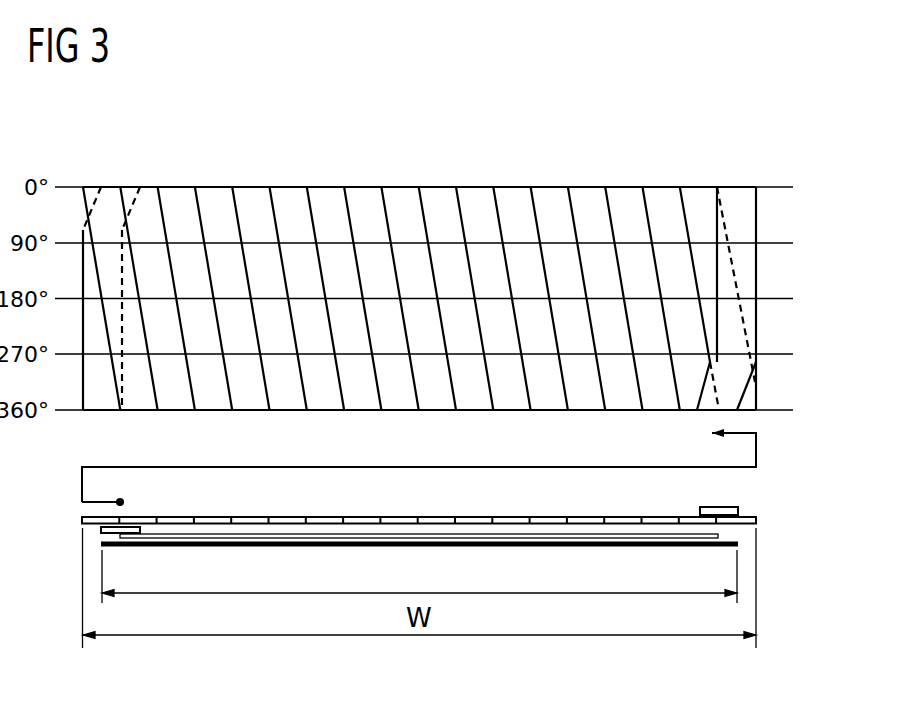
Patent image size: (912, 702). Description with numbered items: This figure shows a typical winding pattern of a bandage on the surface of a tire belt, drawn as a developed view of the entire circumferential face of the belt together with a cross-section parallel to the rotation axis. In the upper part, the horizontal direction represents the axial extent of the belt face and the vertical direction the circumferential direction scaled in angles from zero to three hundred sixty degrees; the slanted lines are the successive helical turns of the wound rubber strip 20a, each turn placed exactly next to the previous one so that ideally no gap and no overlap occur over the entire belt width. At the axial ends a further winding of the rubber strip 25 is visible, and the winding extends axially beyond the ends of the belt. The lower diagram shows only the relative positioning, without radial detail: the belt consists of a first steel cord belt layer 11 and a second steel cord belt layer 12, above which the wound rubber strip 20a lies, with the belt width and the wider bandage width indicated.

The wound rubber strip 20a is at (553, 223).
The further winding of the rubber strip 25 is at (738, 223).
The second steel cord belt layer 12 is at (717, 536).
The first steel cord belt layer 11 is at (688, 547).